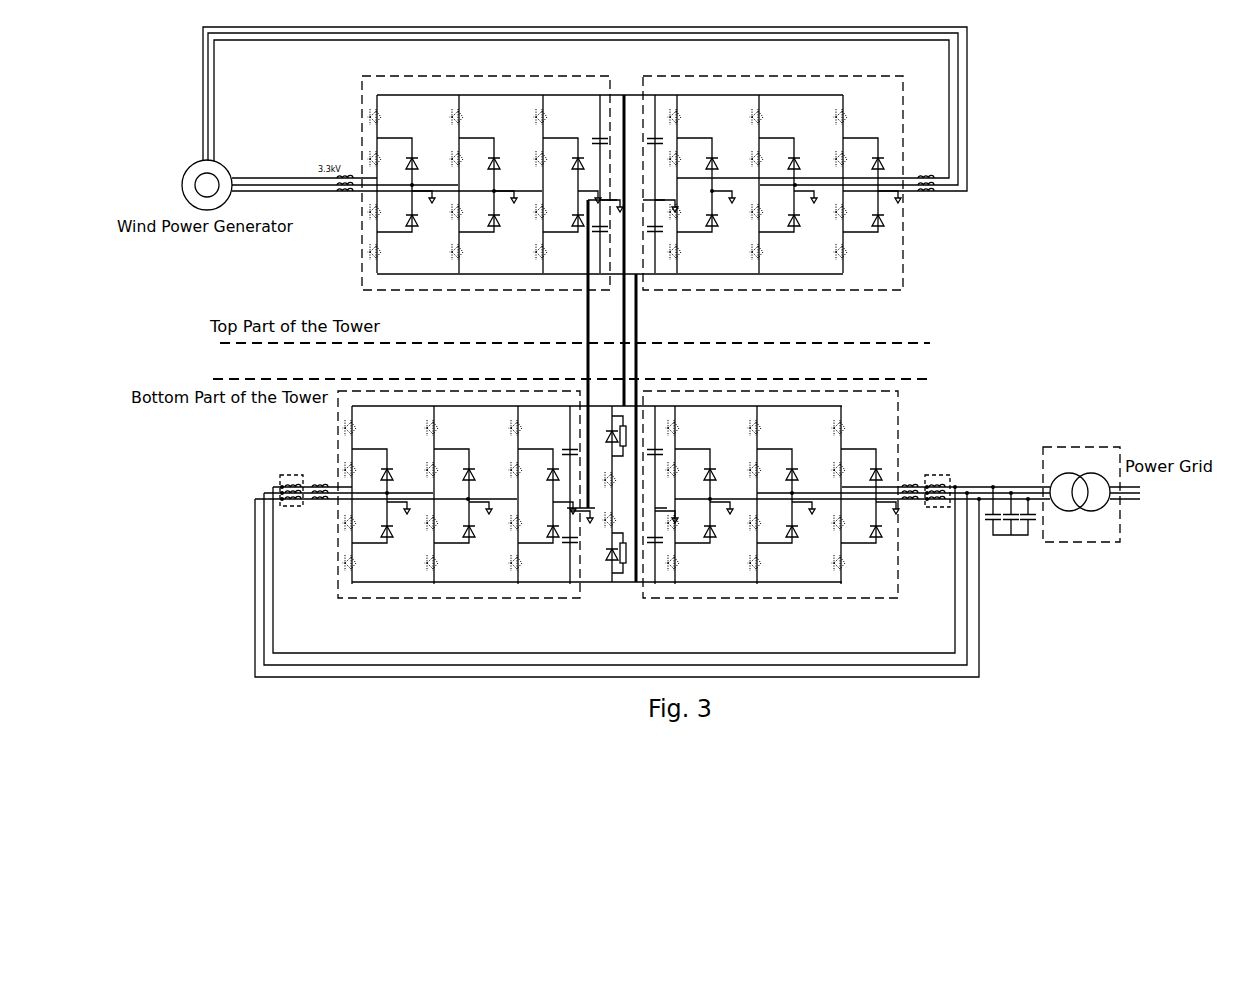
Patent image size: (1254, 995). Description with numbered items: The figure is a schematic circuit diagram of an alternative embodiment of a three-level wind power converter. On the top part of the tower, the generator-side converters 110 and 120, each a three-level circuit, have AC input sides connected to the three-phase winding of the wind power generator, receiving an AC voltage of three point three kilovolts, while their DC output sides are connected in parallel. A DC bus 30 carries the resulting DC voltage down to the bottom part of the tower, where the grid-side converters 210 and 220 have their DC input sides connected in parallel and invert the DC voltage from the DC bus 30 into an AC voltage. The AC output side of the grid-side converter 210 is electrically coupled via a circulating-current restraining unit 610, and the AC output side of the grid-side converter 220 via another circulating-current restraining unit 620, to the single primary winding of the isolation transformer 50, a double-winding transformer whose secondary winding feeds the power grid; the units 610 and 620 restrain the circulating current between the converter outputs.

The generator-side converter 110 is at (498, 291).
The generator-side converter 120 is at (792, 291).
The DC bus 30 is at (637, 318).
The grid-side converter 210 is at (494, 599).
The grid-side converter 220 is at (798, 599).
The circulating-current restraining unit 610 is at (291, 475).
The circulating-current restraining unit 620 is at (936, 475).
The isolation transformer 50 is at (1084, 442).